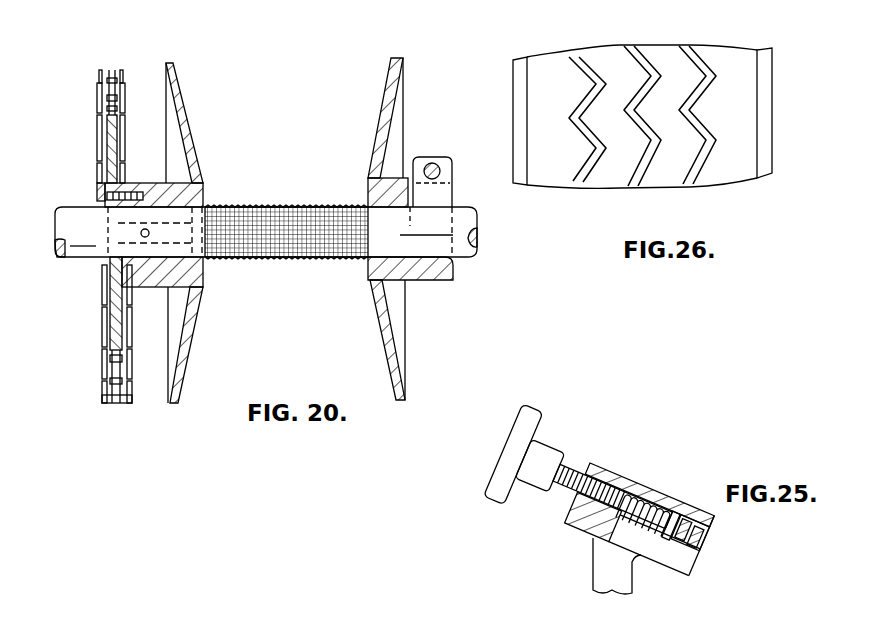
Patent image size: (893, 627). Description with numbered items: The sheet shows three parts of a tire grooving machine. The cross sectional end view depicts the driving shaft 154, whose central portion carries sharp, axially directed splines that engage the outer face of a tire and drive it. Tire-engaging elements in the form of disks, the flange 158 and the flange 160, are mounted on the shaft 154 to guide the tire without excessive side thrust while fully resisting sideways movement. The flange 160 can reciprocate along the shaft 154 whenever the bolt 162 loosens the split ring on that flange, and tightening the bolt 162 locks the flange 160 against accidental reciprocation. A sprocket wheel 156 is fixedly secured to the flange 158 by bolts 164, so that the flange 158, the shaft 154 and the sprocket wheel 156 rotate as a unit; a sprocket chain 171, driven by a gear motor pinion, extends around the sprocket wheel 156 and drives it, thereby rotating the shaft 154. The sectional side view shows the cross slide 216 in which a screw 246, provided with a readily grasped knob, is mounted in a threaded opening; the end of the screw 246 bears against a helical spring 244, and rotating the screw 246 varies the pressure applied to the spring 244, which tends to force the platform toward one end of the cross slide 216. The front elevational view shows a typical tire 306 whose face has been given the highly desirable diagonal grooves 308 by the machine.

In FIG. 20, the shaft 154 is at (80, 256).
In FIG. 20, the sprocket wheel 156 is at (109, 133).
In FIG. 20, the flange 158 is at (187, 134).
In FIG. 20, the flange 160 is at (382, 333).
In FIG. 20, the bolt 162 is at (433, 161).
In FIG. 20, the bolts 164 is at (98, 187).
In FIG. 20, the sprocket chain 171 is at (104, 405).
In FIG. 26, the tire 306 is at (726, 173).
In FIG. 26, the diagonal grooves 308 is at (690, 180).
In FIG. 25, the cross slide 216 is at (603, 567).
In FIG. 25, the helical spring 244 is at (702, 536).
In FIG. 25, the screw 246 is at (643, 494).